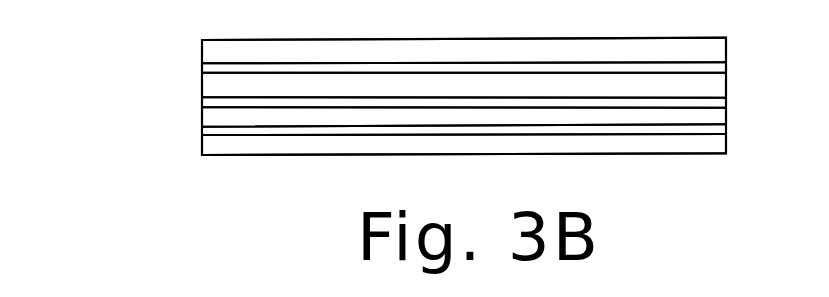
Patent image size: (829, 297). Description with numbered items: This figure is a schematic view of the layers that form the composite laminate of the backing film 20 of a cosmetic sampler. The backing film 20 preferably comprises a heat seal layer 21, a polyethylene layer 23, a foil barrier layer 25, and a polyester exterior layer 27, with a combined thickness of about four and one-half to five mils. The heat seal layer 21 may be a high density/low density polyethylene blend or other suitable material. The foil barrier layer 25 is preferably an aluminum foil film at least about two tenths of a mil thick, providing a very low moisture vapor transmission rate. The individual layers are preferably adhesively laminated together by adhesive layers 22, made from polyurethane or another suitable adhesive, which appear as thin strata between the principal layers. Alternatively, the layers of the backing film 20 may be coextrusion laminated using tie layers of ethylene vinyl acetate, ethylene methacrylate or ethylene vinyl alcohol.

The backing film 20 is at (112, 62).
The heat seal layer 21 is at (717, 46).
The adhesive layers 22 is at (716, 66).
The polyethylene layer 23 is at (208, 83).
The foil barrier layer 25 is at (717, 122).
The polyester exterior layer 27 is at (717, 147).